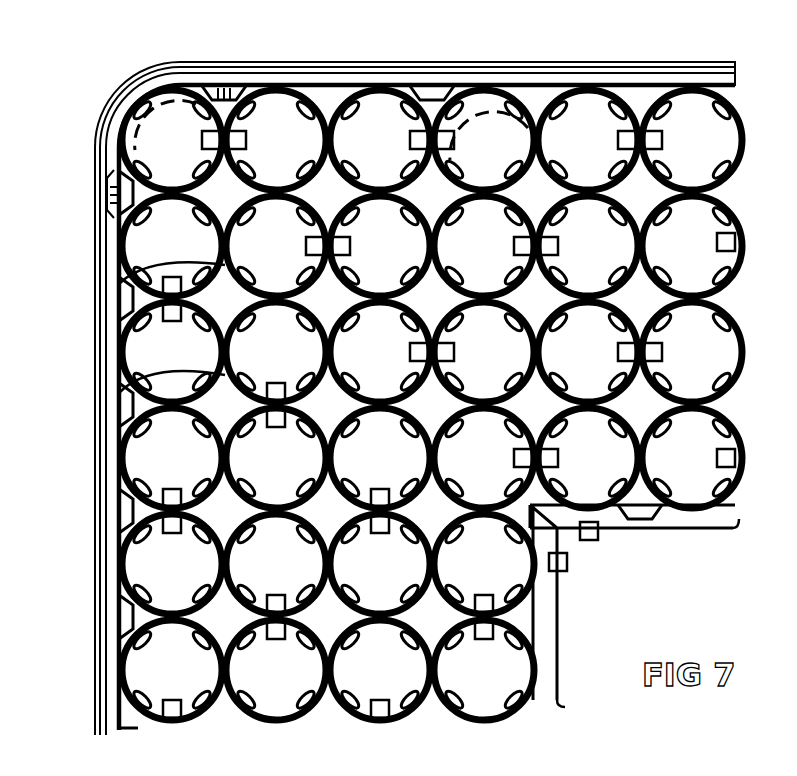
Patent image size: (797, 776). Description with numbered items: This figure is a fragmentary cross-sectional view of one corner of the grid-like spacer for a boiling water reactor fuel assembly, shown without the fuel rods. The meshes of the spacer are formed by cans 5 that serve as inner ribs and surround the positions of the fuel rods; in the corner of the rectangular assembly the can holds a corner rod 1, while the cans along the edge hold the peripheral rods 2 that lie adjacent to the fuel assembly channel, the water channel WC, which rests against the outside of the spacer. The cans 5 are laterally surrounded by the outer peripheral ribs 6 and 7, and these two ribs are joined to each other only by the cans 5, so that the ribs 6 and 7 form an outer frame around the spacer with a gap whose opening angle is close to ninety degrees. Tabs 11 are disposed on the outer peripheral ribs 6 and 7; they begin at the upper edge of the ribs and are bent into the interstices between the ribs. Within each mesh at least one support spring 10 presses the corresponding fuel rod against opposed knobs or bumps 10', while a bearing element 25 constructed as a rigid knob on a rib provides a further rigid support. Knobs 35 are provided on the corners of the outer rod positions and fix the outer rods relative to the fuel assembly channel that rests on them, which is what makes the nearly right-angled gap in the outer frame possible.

The corner rods 1 is at (110, 128).
The water channel WC is at (198, 62).
The outer peripheral rib 6 is at (178, 70).
The outer peripheral rib 7 is at (110, 150).
The bearing element 25 is at (120, 408).
The knobs 35 is at (224, 82).
The tabs 11 is at (430, 92).
The support spring 10 is at (412, 333).
The knobs 10' is at (449, 372).
The peripheral rods 2 is at (482, 92).
The cans 5 is at (120, 283).